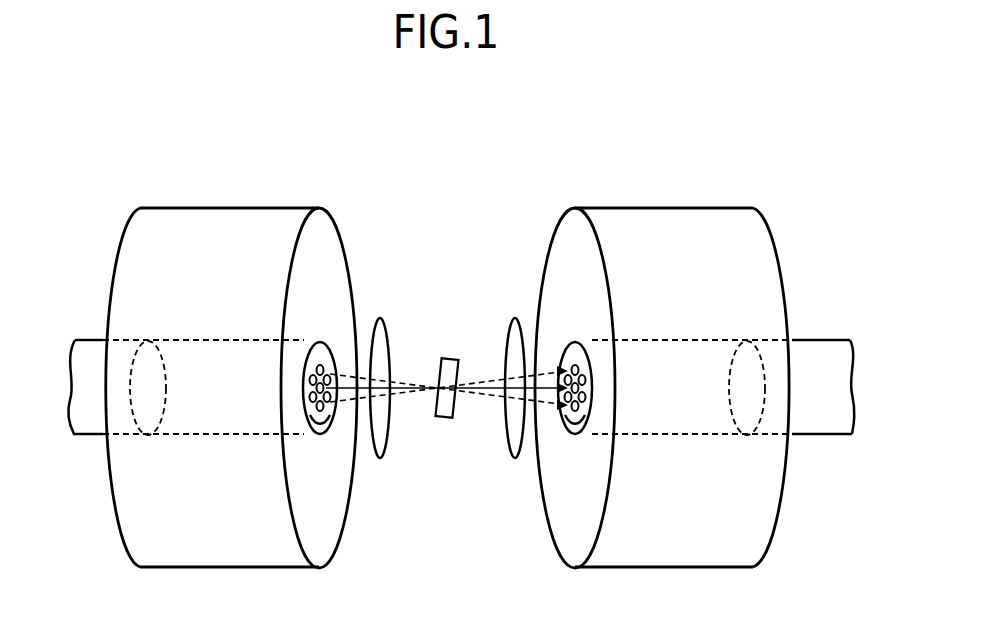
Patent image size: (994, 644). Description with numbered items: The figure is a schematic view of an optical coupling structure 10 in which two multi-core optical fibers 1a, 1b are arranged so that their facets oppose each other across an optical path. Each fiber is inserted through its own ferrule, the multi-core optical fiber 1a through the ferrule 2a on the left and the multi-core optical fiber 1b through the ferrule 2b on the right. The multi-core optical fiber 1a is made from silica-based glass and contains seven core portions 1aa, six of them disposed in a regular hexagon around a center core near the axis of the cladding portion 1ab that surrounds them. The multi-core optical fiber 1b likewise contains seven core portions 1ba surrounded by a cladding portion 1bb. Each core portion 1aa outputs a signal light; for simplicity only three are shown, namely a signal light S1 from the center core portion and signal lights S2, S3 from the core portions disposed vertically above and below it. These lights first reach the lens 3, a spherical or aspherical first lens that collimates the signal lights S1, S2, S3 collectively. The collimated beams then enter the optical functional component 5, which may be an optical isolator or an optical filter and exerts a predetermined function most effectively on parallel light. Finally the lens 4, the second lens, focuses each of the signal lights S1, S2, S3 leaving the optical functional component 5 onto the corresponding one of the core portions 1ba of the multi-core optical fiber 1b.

The optical coupling structure 10 is at (747, 166).
The multi-core optical fiber 1a is at (90, 341).
The multi-core optical fiber 1b is at (828, 341).
The core portions 1aa is at (321, 342).
The cladding portion 1ab is at (321, 425).
The core portions 1ba is at (574, 342).
The cladding portion 1bb is at (574, 425).
The ferrule 2a is at (232, 208).
The ferrule 2b is at (644, 208).
The lens 3 is at (381, 318).
The lens 4 is at (514, 318).
The optical functional component 5 is at (451, 358).
The signal light S1 is at (348, 391).
The signal light S2 is at (403, 374).
The signal light S3 is at (400, 398).